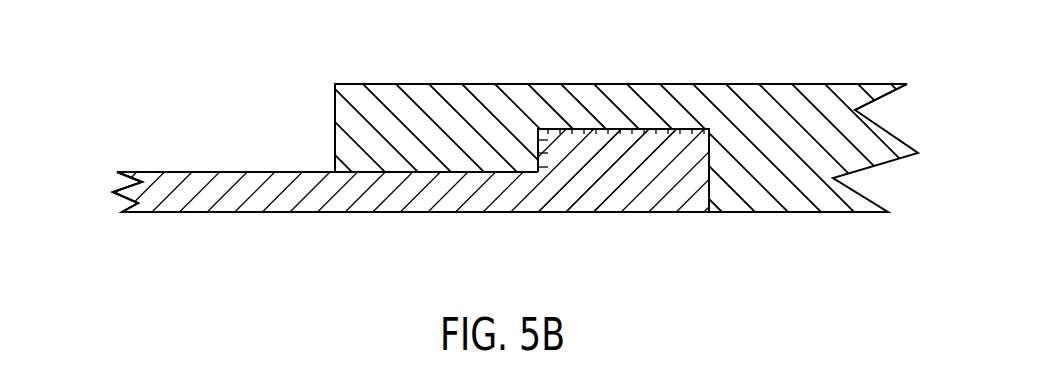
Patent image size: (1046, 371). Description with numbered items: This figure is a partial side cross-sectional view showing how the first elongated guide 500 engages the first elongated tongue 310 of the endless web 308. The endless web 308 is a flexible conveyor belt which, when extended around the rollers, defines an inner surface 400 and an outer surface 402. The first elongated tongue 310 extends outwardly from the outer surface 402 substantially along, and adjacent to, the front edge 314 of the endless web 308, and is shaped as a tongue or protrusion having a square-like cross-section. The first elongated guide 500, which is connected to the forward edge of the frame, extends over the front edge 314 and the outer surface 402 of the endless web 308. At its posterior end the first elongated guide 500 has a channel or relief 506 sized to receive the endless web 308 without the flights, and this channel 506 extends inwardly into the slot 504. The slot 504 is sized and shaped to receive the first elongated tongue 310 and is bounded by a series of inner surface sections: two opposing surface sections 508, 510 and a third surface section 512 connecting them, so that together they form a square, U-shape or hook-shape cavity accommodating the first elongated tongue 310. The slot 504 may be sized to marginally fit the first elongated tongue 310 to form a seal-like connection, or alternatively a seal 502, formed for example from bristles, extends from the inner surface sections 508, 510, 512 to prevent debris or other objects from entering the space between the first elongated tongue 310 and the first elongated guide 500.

The first elongated guide 500 is at (822, 102).
The seal 502 is at (600, 129).
The slot 504 is at (648, 141).
The channel 506 is at (438, 193).
The inner surface section 508 is at (708, 158).
The inner surface section 510 is at (538, 129).
The third surface section 512 is at (667, 129).
The inner surface 400 is at (242, 214).
The outer surface 402 is at (214, 168).
The endless web 308 is at (173, 187).
The first elongated tongue 310 is at (583, 178).
The front edge 314 is at (712, 188).